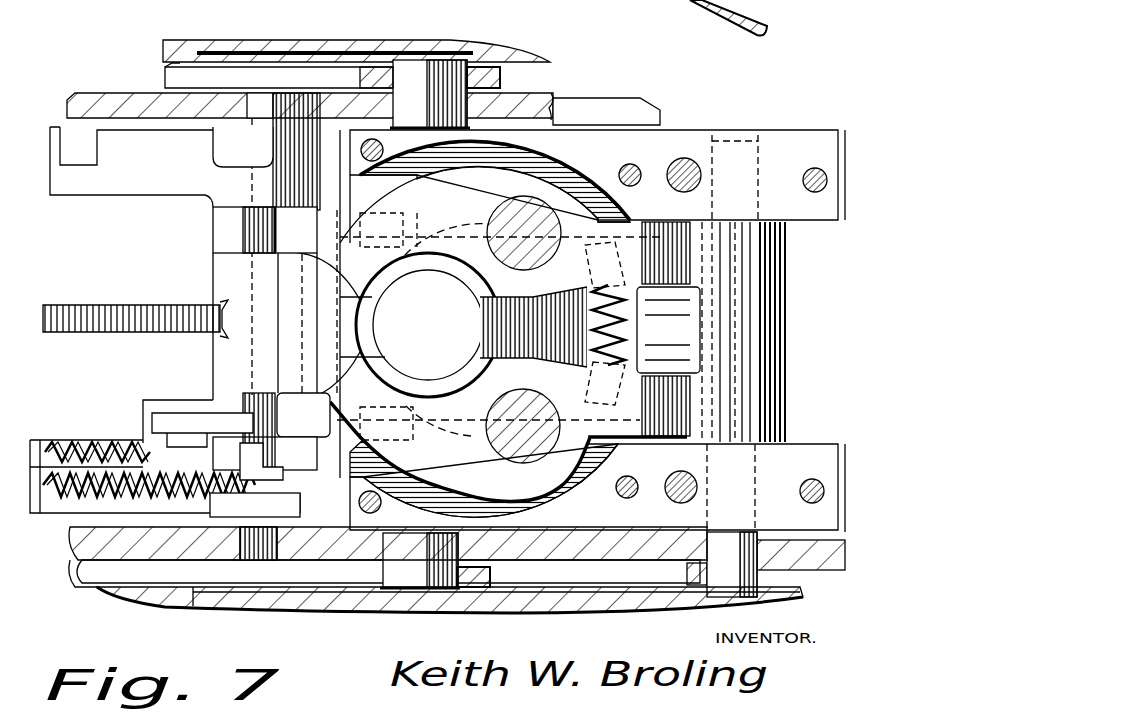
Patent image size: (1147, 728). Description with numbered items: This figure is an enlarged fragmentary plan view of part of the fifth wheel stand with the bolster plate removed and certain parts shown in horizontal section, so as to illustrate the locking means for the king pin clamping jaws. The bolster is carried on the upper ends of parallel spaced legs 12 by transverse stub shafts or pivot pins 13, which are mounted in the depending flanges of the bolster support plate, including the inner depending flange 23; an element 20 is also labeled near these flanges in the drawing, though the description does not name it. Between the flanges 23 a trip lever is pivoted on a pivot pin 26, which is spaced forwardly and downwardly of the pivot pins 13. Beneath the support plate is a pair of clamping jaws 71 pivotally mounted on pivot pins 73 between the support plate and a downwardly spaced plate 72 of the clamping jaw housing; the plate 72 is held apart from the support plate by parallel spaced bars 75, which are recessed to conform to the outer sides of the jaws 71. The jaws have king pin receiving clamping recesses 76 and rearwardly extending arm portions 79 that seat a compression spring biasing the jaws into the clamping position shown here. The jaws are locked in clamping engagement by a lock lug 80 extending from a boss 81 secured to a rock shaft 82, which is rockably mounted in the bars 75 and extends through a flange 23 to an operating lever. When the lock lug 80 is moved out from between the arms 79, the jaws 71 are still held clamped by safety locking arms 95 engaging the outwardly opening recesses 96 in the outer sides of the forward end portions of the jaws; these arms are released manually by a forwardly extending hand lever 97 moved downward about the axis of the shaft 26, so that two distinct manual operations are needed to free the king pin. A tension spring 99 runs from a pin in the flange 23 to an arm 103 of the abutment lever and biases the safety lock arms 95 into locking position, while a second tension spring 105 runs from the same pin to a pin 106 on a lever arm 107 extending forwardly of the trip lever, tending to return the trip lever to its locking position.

The leg 12 is at (86, 597).
The pivot pin 13 is at (415, 75).
The clamp bar 20 is at (495, 68).
The inner flange 23 is at (583, 105).
The pivot pin 26 is at (267, 105).
The clamping jaw 71 is at (495, 170).
The plate 72 is at (503, 330).
The pivot pin 73 is at (523, 220).
The bar 75 is at (648, 512).
The clamping recess 76 is at (416, 270).
The arm portion 79 is at (593, 325).
The lock lug 80 is at (640, 352).
The boss 81 is at (770, 230).
The rock shaft 82 is at (760, 586).
The safety locking arm 95 is at (293, 232).
The recess 96 is at (320, 245).
The hand lever 97 is at (137, 280).
The tension spring 99 is at (80, 440).
The arm 103 is at (190, 372).
The tension spring 105 is at (87, 493).
The pin 106 is at (263, 463).
The lever arm 107 is at (265, 505).